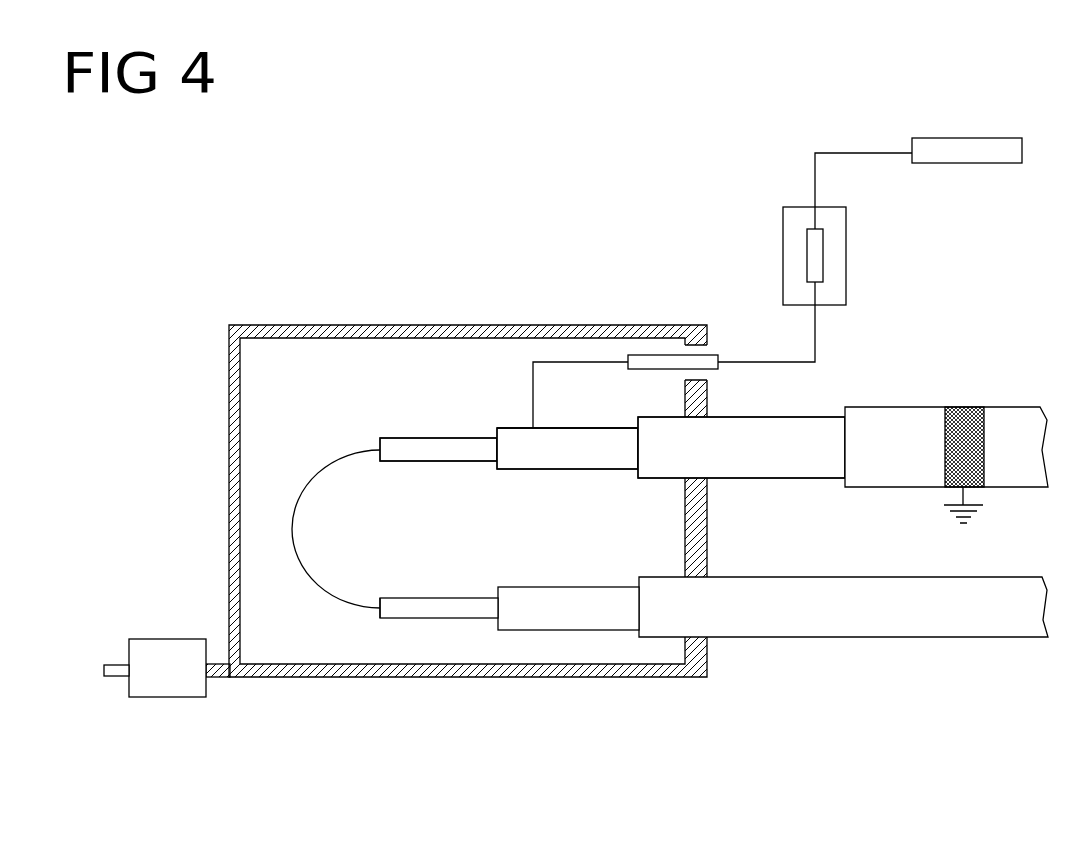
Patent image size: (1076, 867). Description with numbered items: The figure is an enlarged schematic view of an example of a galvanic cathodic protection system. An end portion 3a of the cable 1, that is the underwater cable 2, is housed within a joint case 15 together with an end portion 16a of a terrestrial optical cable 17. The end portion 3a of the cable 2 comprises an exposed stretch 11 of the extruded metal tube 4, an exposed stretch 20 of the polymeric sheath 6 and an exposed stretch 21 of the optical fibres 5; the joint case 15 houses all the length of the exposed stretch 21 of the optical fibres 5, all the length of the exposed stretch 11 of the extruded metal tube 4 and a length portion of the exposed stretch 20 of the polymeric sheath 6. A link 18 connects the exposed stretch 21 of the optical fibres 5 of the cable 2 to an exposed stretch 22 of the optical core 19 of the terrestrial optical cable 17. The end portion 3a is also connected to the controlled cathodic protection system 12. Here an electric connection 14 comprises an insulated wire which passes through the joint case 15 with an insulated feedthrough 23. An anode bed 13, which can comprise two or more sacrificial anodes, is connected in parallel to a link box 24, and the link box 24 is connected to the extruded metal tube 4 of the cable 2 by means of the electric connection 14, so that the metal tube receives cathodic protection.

The cable 1 is at (370, 280).
The underwater cable 2 is at (905, 422).
The end portion 3a is at (586, 428).
The extruded metal tube 4 is at (527, 445).
The optical fibres 5 is at (447, 440).
The polymeric sheath 6 is at (757, 440).
The exposed stretch of the extruded metal tube 11 is at (499, 438).
The controlled cathodic protection system 12 is at (838, 132).
The anode bed 13 is at (965, 150).
The electric connection 14 is at (598, 362).
The joint case 15 is at (300, 325).
The end portion of the terrestrial optical cable 16a is at (557, 603).
The terrestrial optical cable 17 is at (827, 607).
The link 18 is at (292, 517).
The optical core 19 is at (389, 612).
The exposed stretch of the polymeric sheath 20 is at (786, 463).
The exposed stretch of the optical fibres 21 is at (474, 448).
The exposed stretch of the optical core 22 is at (430, 605).
The insulated feedthrough 23 is at (663, 360).
The link box 24 is at (790, 205).